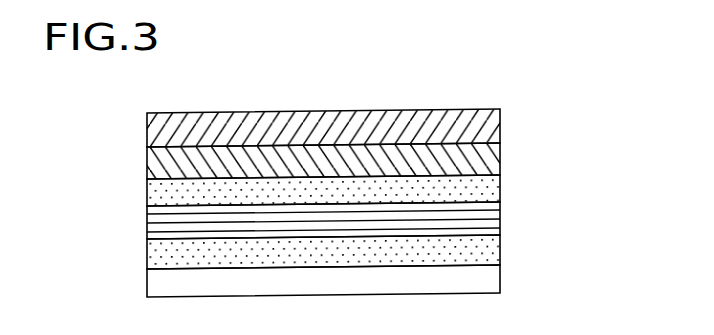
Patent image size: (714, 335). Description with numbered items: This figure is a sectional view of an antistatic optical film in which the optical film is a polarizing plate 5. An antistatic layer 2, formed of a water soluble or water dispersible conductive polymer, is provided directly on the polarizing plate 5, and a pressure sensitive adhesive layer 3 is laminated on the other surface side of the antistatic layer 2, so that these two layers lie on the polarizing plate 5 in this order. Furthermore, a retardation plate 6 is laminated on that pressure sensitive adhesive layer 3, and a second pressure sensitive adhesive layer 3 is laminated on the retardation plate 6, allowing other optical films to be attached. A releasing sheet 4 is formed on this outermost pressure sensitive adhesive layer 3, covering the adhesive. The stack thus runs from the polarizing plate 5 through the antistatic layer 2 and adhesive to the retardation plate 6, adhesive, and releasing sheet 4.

The polarizing plate 5 is at (475, 123).
The antistatic layer 2 is at (475, 142).
The pressure sensitive adhesive layer 3 is at (475, 190).
The retardation plate 6 is at (475, 217).
The releasing sheet 4 is at (475, 281).